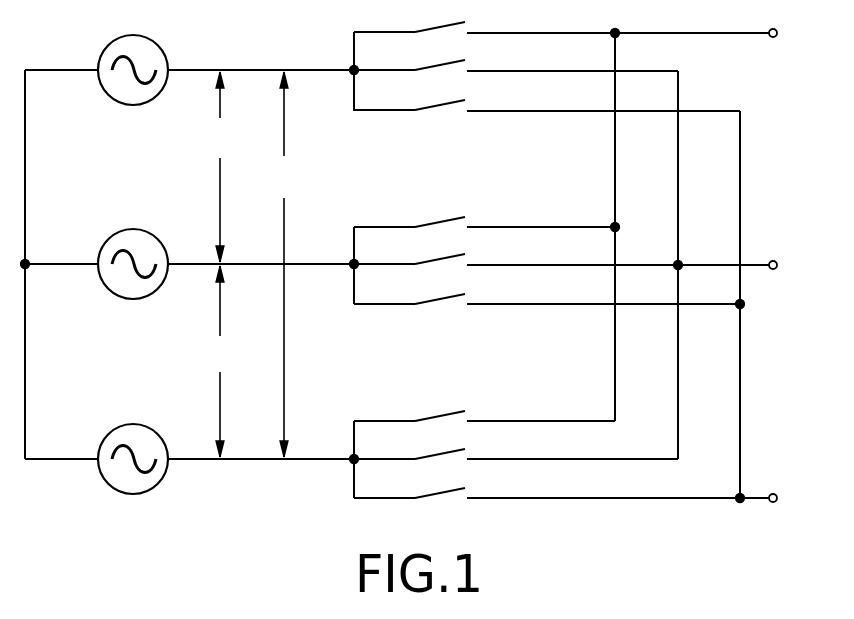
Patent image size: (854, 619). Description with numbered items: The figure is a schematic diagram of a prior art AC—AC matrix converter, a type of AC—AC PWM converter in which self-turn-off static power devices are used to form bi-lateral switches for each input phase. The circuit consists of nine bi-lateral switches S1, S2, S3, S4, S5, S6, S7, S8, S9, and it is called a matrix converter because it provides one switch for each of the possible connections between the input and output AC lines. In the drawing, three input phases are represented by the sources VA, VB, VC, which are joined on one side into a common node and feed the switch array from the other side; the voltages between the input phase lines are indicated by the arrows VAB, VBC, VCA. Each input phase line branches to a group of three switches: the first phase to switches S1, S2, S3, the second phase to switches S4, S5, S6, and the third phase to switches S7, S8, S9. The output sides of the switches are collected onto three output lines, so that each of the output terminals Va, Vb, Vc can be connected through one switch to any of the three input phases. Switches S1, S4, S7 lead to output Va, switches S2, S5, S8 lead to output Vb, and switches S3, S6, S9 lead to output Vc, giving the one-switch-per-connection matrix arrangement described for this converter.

The bi-lateral switch S1 is at (563, 16).
The bi-lateral switch S2 is at (516, 53).
The bi-lateral switch S3 is at (547, 93).
The bi-lateral switch S4 is at (484, 208).
The bi-lateral switch S5 is at (563, 247).
The bi-lateral switch S6 is at (547, 286).
The bi-lateral switch S7 is at (484, 402).
The bi-lateral switch S8 is at (516, 441).
The bi-lateral switch S9 is at (563, 480).
The phase A voltage source VA is at (123, 57).
The phase B voltage source VB is at (123, 251).
The phase C voltage source VC is at (123, 446).
The line-to-line voltage A-B VAB is at (222, 167).
The line-to-line voltage B-C VBC is at (216, 361).
The line-to-line voltage C-A VCA is at (278, 264).
The output terminal a Va is at (789, 27).
The output terminal b Vb is at (789, 259).
The output terminal c Vc is at (788, 492).